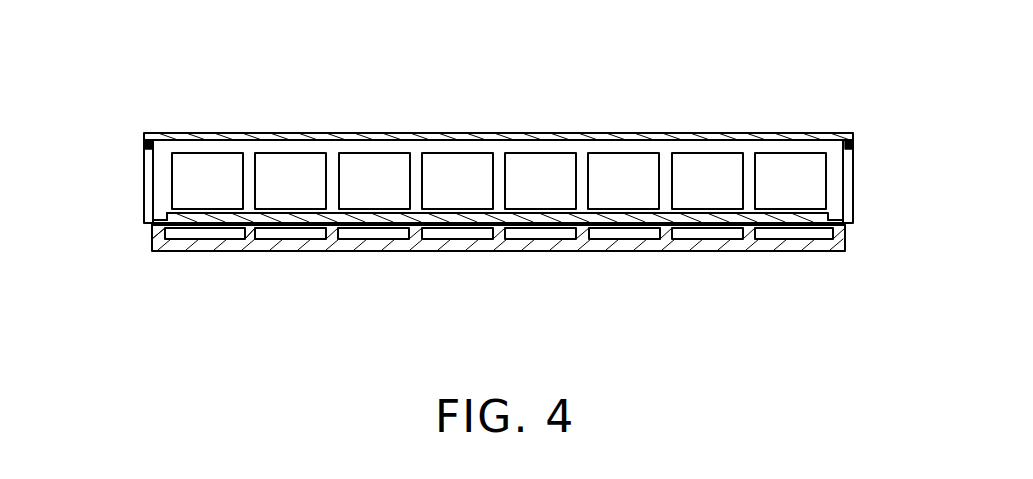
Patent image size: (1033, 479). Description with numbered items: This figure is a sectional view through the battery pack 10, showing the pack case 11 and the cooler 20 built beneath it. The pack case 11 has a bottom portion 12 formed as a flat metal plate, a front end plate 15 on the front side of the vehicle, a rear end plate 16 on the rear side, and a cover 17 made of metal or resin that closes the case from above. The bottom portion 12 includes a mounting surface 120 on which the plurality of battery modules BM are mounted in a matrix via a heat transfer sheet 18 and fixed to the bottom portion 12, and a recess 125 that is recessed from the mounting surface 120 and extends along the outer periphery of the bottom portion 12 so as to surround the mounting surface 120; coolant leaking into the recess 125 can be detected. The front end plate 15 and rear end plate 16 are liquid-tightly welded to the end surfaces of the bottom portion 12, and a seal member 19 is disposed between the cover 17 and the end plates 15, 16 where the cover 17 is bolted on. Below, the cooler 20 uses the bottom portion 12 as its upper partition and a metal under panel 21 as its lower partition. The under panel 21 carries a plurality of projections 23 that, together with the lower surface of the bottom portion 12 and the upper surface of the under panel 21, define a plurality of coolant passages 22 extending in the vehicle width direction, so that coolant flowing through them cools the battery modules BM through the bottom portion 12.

The battery pack 10 is at (115, 128).
The pack case 11 is at (866, 150).
The bottom portion 12 is at (473, 225).
The front end plate 15 is at (145, 203).
The rear end plate 16 is at (855, 175).
The cover 17 is at (497, 133).
The heat transfer sheet 18 is at (417, 212).
The seal member 19 is at (143, 142).
The cooler 20 is at (848, 239).
The under panel 21 is at (752, 242).
The coolant passages 22 is at (578, 235).
The projections 23 is at (237, 230).
The mounting surface 120 is at (330, 212).
The recess 125 is at (158, 215).
The battery modules BM is at (709, 167).